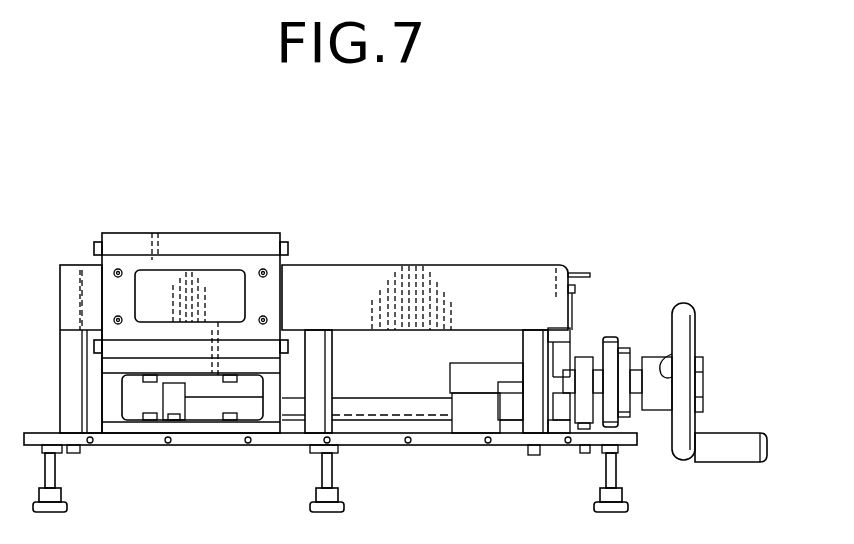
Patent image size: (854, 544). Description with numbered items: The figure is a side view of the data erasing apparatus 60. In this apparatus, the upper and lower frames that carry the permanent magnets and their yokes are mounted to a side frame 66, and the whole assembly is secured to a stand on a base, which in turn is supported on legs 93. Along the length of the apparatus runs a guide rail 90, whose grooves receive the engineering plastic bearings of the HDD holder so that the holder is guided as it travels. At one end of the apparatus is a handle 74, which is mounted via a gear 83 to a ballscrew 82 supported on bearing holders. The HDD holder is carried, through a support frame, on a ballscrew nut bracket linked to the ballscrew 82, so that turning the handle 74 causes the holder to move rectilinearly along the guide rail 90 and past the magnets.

The data erasing apparatus 60 is at (665, 260).
The side frame 66 is at (118, 295).
The handle 74 is at (680, 433).
The ballscrew 82 is at (433, 407).
The gear 83 is at (610, 360).
The guide rail 90 is at (481, 293).
The legs 93 is at (322, 402).